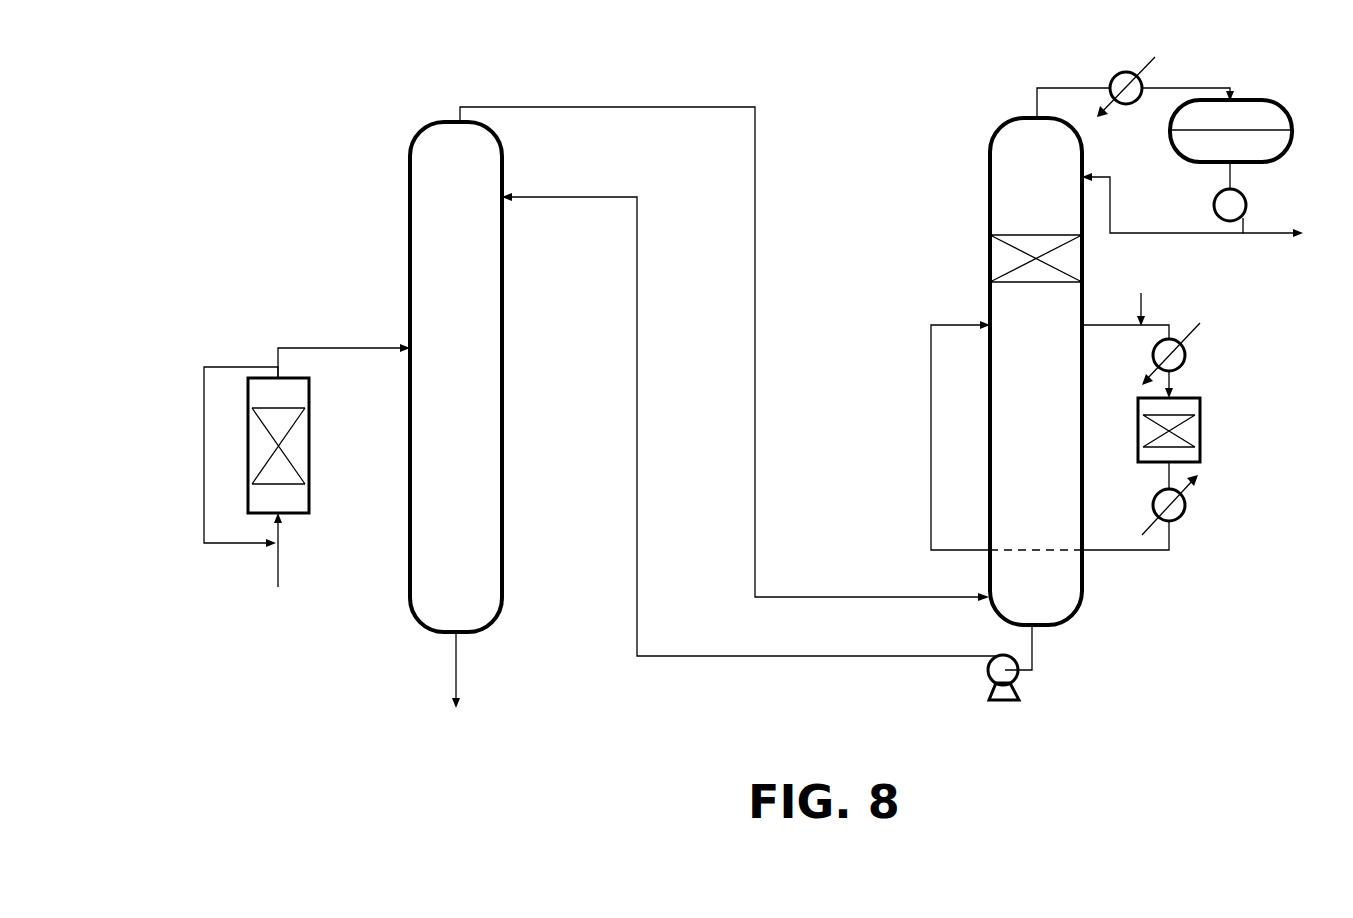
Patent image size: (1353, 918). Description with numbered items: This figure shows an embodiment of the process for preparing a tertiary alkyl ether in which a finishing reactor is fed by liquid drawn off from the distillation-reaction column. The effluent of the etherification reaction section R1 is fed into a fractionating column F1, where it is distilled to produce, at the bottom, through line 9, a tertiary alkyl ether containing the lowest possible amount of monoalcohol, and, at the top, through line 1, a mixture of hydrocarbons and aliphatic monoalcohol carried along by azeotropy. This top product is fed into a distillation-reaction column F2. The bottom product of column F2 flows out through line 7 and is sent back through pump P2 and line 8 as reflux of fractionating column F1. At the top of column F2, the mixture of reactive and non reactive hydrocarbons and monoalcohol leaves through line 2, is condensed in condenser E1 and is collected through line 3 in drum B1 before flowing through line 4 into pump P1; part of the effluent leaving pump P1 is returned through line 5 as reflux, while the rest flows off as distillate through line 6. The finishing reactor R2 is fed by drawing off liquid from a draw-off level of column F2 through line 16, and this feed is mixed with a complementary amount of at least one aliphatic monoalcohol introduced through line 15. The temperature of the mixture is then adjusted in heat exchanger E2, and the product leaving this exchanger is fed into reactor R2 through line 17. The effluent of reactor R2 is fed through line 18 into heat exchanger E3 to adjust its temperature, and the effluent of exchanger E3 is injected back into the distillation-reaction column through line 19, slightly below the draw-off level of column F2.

The line 1 is at (696, 107).
The line 2 is at (1050, 88).
The line 3 is at (1200, 87).
The line 4 is at (1232, 166).
The line 5 is at (1141, 233).
The line 6 is at (1275, 233).
The line 7 is at (1034, 637).
The line 8 is at (958, 657).
The line 9 is at (456, 647).
The line 15 is at (1143, 295).
The line 16 is at (1165, 323).
The line 17 is at (1171, 383).
The line 18 is at (1200, 463).
The line 19 is at (931, 448).
The fractionating column F1 is at (456, 377).
The distillation-reaction column F2 is at (1036, 371).
The etherification reaction section R1 is at (301, 445).
The finishing reactor R2 is at (1191, 430).
The condenser E1 is at (1118, 87).
The heat exchanger E2 is at (1185, 354).
The heat exchanger E3 is at (1185, 505).
The drum B1 is at (1231, 120).
The pump P1 is at (1216, 200).
The pump P2 is at (1003, 700).